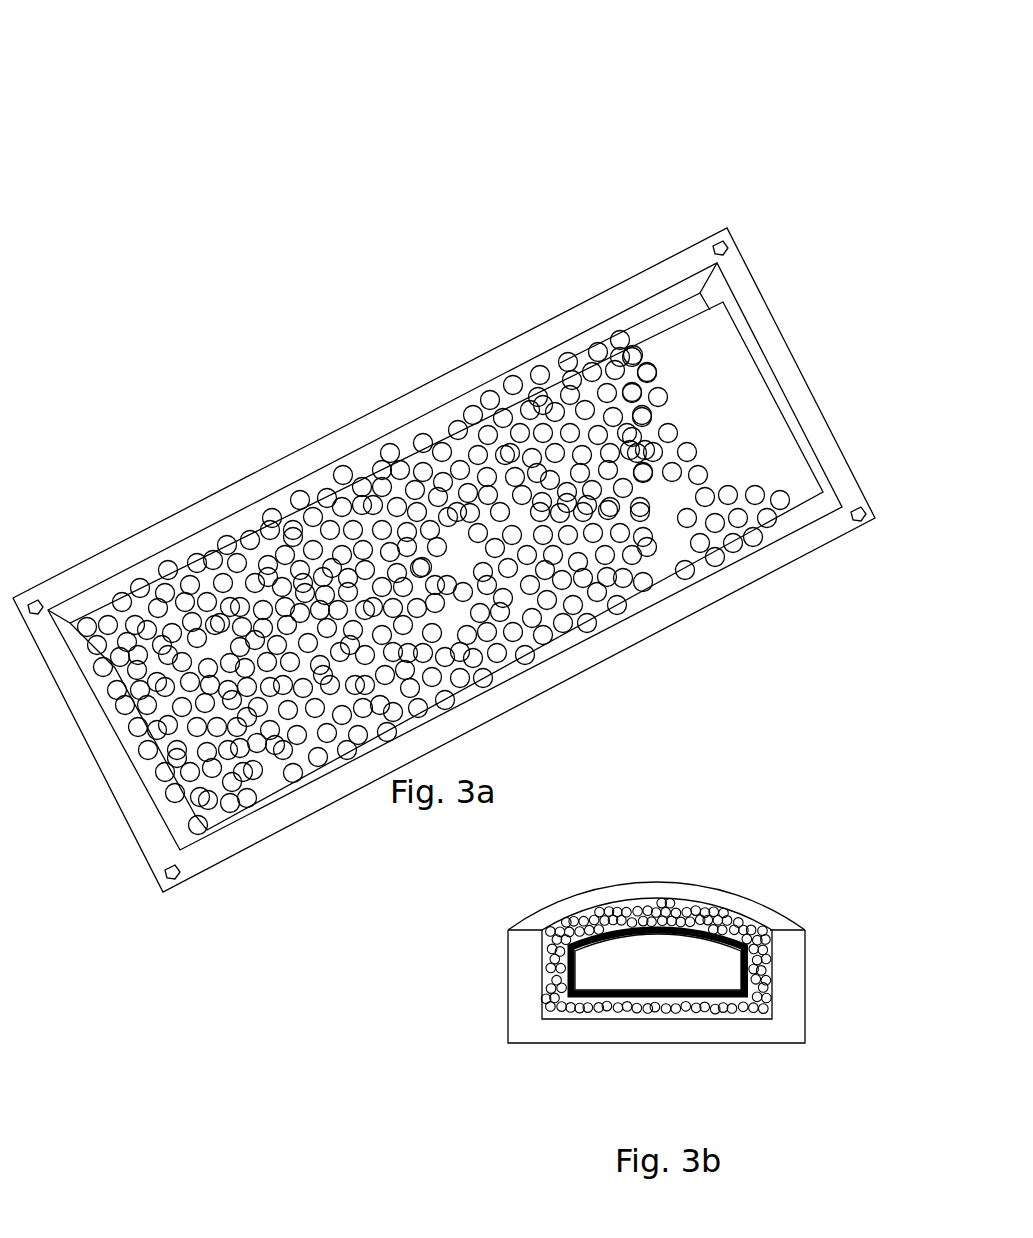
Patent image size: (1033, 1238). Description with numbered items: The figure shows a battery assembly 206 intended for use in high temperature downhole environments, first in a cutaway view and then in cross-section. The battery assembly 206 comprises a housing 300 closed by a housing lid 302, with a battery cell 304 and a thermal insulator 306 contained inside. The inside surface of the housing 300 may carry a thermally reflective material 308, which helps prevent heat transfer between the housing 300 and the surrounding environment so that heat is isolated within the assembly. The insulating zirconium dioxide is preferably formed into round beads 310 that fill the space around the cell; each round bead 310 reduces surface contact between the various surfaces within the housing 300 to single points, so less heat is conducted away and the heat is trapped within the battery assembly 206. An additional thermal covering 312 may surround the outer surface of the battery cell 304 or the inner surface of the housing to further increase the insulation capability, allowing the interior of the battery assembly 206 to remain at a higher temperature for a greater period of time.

In FIG. 3a, the battery assembly 206 is at (408, 274).
In FIG. 3a, the housing 300 is at (250, 832).
In FIG. 3b, the housing 300 is at (775, 1037).
In FIG. 3b, the housing lid 302 is at (628, 880).
In FIG. 3a, the battery cell 304 is at (708, 373).
In FIG. 3b, the battery cell 304 is at (622, 980).
In FIG. 3a, the thermal insulator 306 is at (533, 603).
In FIG. 3a, the thermally reflective material 308 is at (553, 355).
In FIG. 3a, the round bead 310 is at (786, 500).
In FIG. 3b, the round bead 310 is at (543, 970).
In FIG. 3b, the thermal covering 312 is at (773, 955).